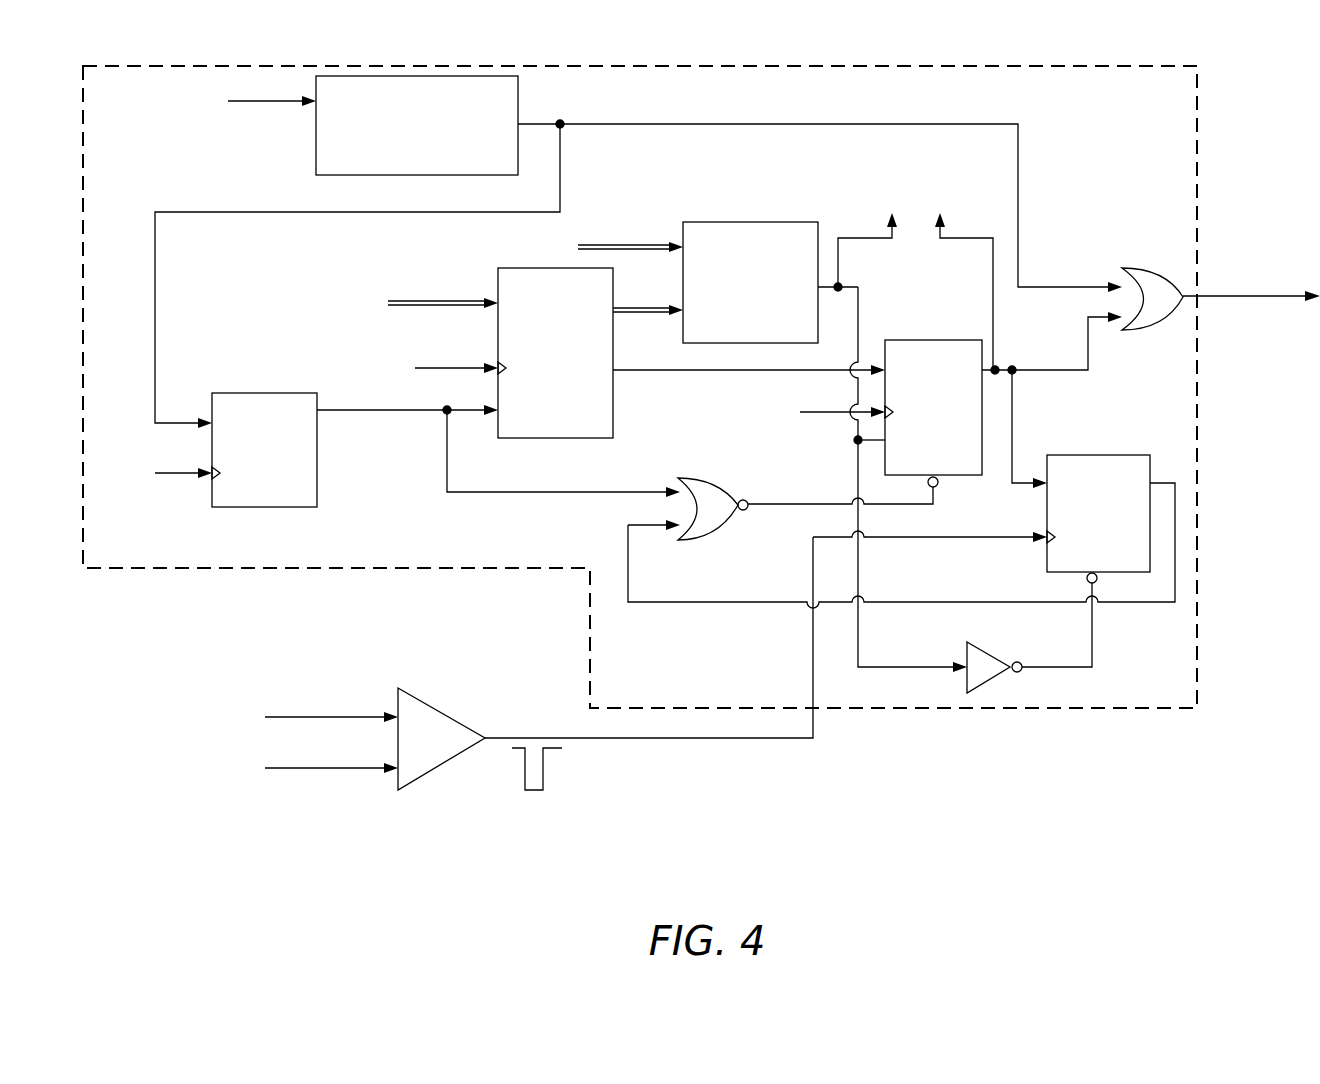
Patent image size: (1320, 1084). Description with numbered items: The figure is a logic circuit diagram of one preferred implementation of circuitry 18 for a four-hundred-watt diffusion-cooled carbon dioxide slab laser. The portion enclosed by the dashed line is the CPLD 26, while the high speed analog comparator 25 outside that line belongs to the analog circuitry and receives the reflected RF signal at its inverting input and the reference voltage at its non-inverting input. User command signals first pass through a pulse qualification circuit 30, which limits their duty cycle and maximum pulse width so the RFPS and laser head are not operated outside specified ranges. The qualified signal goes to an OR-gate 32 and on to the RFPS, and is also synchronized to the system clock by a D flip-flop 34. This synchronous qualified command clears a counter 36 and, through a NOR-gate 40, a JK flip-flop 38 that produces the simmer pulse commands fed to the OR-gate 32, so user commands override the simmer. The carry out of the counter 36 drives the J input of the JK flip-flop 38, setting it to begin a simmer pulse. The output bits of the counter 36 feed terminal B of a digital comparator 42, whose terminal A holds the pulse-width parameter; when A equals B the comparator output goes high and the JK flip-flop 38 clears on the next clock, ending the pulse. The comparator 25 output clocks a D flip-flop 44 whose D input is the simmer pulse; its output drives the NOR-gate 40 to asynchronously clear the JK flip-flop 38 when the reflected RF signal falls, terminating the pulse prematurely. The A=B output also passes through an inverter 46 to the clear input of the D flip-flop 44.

The circuitry 18 is at (701, 477).
The analog comparator 25 is at (457, 692).
The CPLD 26 is at (948, 714).
The pulse qualification circuit 30 is at (316, 152).
The OR-gate 32 is at (1157, 312).
The D flip-flop 34 is at (312, 480).
The counter 36 is at (497, 270).
The JK flip-flop 38 is at (975, 340).
The NOR-gate 40 is at (698, 481).
The digital comparator 42 is at (720, 222).
The D flip-flop 44 is at (1105, 455).
The inverter 46 is at (988, 678).